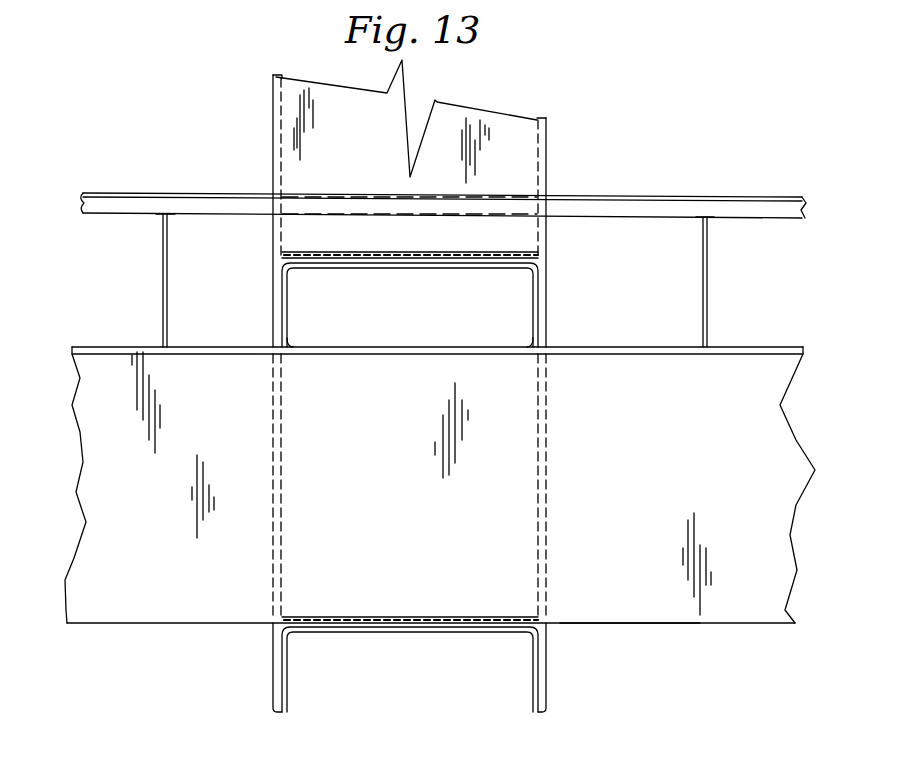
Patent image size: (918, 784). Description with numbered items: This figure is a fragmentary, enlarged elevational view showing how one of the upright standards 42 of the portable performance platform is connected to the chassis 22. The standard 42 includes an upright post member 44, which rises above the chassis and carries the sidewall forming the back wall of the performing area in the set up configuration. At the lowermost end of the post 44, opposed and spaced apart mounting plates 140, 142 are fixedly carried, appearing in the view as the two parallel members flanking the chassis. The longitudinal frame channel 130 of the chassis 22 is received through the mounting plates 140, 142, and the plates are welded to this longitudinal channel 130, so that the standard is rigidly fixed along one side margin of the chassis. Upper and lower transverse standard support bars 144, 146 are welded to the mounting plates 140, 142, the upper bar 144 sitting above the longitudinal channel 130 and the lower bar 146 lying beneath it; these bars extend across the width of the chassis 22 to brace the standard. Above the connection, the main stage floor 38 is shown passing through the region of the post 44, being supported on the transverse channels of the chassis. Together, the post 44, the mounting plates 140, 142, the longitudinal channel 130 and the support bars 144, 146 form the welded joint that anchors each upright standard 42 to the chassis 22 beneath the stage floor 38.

The chassis 22 is at (618, 650).
The main stage floor 38 is at (627, 207).
The upright standard 42 is at (527, 160).
The upright post member 44 is at (302, 167).
The longitudinal frame channel 130 is at (738, 592).
The mounting plate 140 is at (547, 697).
The mounting plate 142 is at (273, 653).
The upper transverse standard support bar 144 is at (282, 288).
The lower transverse standard support bar 146 is at (285, 690).